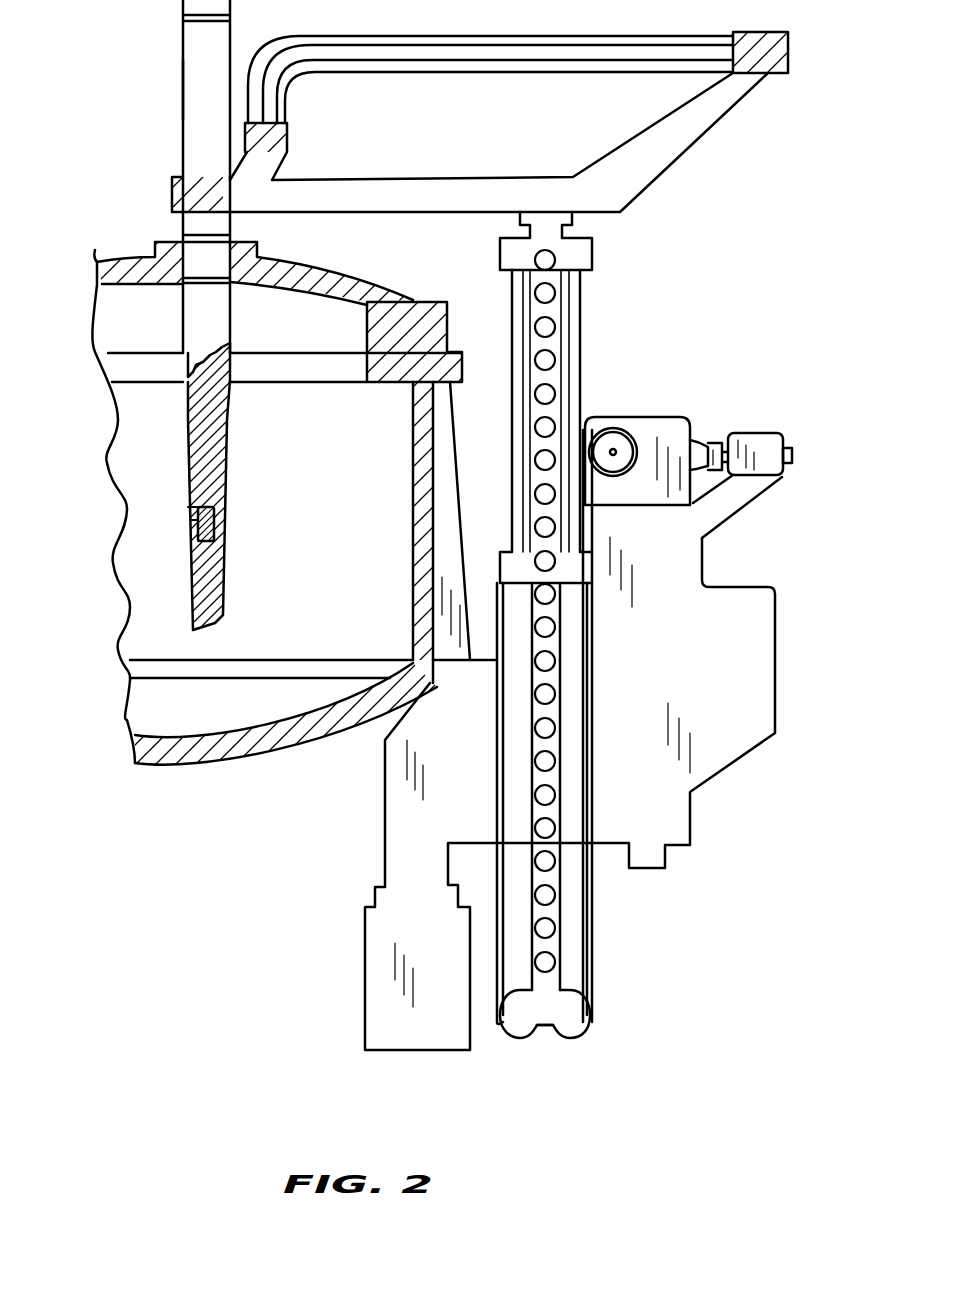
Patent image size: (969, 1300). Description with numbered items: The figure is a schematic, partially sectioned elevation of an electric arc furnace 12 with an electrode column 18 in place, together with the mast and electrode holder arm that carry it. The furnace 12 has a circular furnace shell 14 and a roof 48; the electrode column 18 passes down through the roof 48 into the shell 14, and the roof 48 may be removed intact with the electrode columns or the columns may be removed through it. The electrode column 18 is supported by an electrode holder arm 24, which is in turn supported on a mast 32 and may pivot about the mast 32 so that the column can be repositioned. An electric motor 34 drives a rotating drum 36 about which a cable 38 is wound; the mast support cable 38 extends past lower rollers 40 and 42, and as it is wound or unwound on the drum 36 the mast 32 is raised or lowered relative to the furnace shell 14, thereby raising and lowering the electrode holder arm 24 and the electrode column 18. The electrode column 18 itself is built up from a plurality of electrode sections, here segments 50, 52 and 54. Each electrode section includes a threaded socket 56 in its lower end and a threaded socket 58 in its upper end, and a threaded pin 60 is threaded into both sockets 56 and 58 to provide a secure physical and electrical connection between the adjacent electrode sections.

The electric arc furnace 12 is at (138, 532).
The furnace shell 14 is at (138, 603).
The electrode column 18 is at (197, 43).
The electrode holder arm 24 is at (307, 177).
The mast 32 is at (552, 340).
The electric motor 34 is at (760, 433).
The rotating drum 36 is at (623, 445).
The cable 38 is at (597, 702).
The lower roller 40 is at (572, 1022).
The lower roller 42 is at (530, 1022).
The roof 48 is at (122, 263).
The electrode section 50 is at (193, 88).
The electrode section 52 is at (192, 315).
The electrode section 54 is at (190, 595).
The threaded socket 56 is at (192, 508).
The threaded socket 58 is at (192, 538).
The threaded pin 60 is at (217, 518).